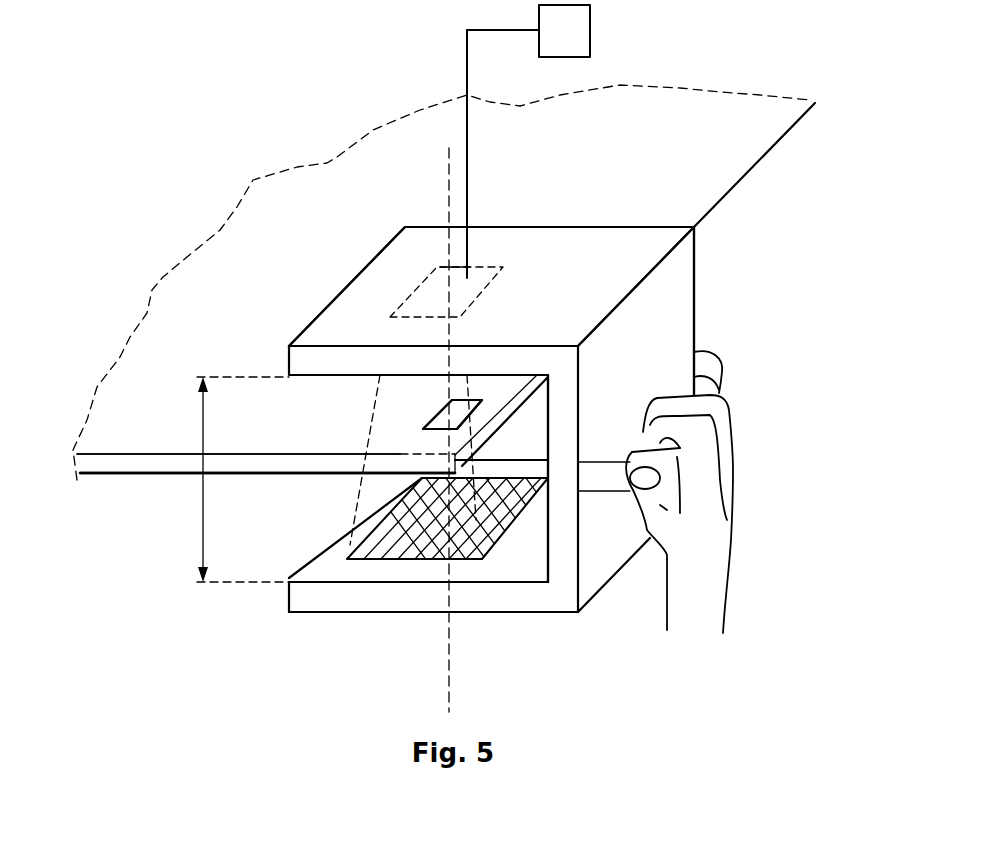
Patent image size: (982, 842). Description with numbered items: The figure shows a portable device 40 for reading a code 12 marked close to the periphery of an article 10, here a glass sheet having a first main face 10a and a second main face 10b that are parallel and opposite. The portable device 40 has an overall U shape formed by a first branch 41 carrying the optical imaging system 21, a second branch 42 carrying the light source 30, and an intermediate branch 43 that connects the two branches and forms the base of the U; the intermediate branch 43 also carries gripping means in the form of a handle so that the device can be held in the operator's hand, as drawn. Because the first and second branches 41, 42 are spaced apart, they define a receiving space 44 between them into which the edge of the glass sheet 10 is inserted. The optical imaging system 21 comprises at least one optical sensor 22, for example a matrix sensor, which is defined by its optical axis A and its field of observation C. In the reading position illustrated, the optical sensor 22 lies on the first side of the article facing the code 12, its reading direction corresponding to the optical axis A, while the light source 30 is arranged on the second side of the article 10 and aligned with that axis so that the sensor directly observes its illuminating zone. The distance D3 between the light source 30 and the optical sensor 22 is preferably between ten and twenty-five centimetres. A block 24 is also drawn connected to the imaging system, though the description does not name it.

The article 10 is at (157, 383).
The first main face 10a is at (110, 452).
The second main face 10b is at (128, 478).
The code 12 is at (428, 421).
The optical imaging system 21 is at (515, 210).
The optical sensor 22 is at (483, 278).
The controller 24 is at (551, 48).
The light source 30 is at (420, 538).
The portable device 40 is at (735, 262).
The first branch 41 is at (375, 293).
The second branch 42 is at (500, 597).
The intermediate branch 43 is at (683, 317).
The receiving space 44 is at (508, 449).
The optical axis A is at (443, 428).
The field of observation C is at (372, 388).
The distance D3 is at (223, 479).